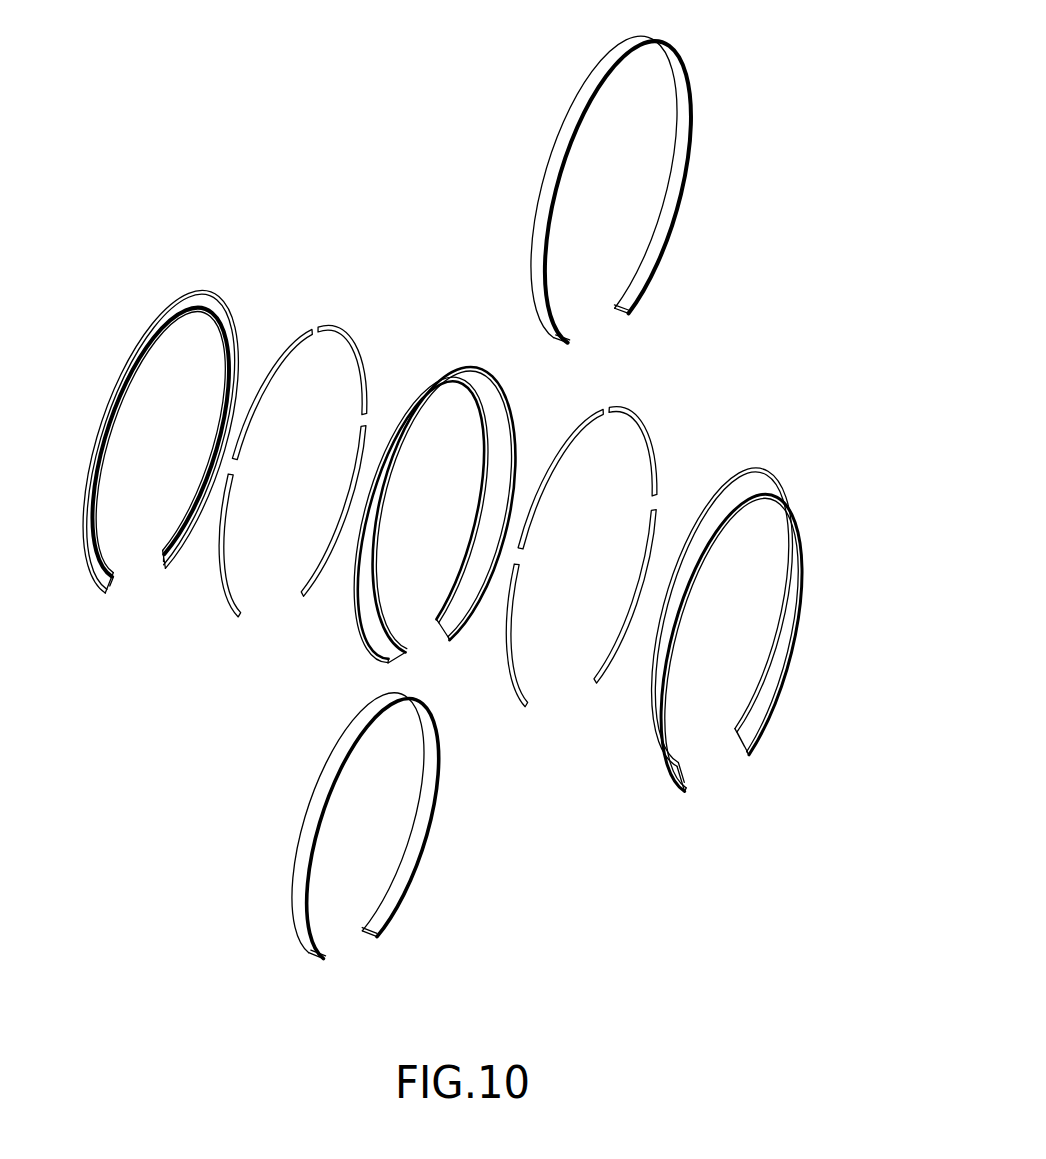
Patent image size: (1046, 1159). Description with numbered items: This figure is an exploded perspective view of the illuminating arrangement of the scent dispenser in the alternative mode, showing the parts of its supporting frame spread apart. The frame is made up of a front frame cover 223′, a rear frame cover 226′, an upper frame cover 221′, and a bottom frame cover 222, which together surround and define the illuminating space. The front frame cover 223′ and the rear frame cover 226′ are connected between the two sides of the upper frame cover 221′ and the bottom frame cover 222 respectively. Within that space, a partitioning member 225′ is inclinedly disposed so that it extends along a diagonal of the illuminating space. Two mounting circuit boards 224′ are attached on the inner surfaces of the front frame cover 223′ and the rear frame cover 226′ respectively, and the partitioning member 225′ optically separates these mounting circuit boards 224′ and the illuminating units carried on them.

The upper frame cover 221′ is at (670, 198).
The bottom frame cover 222 is at (385, 917).
The front frame cover 223′ is at (235, 330).
The mounting circuit boards 224′ is at (337, 330).
The partitioning member 225′ is at (502, 440).
The rear frame cover 226′ is at (803, 560).